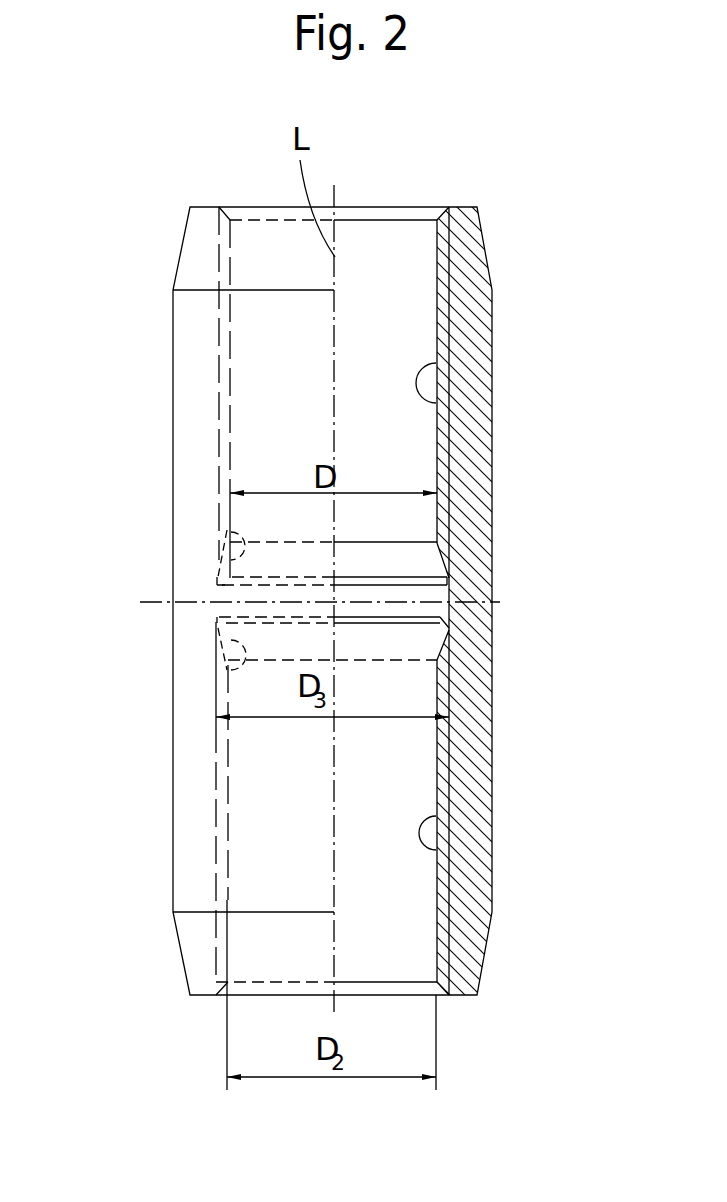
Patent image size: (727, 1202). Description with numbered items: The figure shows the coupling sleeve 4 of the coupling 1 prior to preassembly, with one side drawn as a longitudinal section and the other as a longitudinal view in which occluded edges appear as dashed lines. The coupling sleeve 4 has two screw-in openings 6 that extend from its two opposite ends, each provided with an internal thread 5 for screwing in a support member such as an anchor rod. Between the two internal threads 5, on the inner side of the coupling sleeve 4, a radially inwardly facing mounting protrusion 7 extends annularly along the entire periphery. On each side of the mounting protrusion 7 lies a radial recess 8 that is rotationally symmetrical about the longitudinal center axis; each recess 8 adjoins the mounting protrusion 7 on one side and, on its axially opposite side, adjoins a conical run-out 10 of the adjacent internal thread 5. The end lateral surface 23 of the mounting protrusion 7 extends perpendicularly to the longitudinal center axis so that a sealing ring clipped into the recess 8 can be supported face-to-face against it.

The coupling 1 is at (128, 240).
The coupling sleeve 4 is at (462, 293).
The internal thread 5 is at (420, 403).
The screw-in opening 6 is at (377, 245).
The mounting protrusion 7 is at (440, 595).
The radial recess 8 is at (448, 580).
The conical run-out 10 is at (242, 542).
The end lateral surface 23 is at (443, 577).